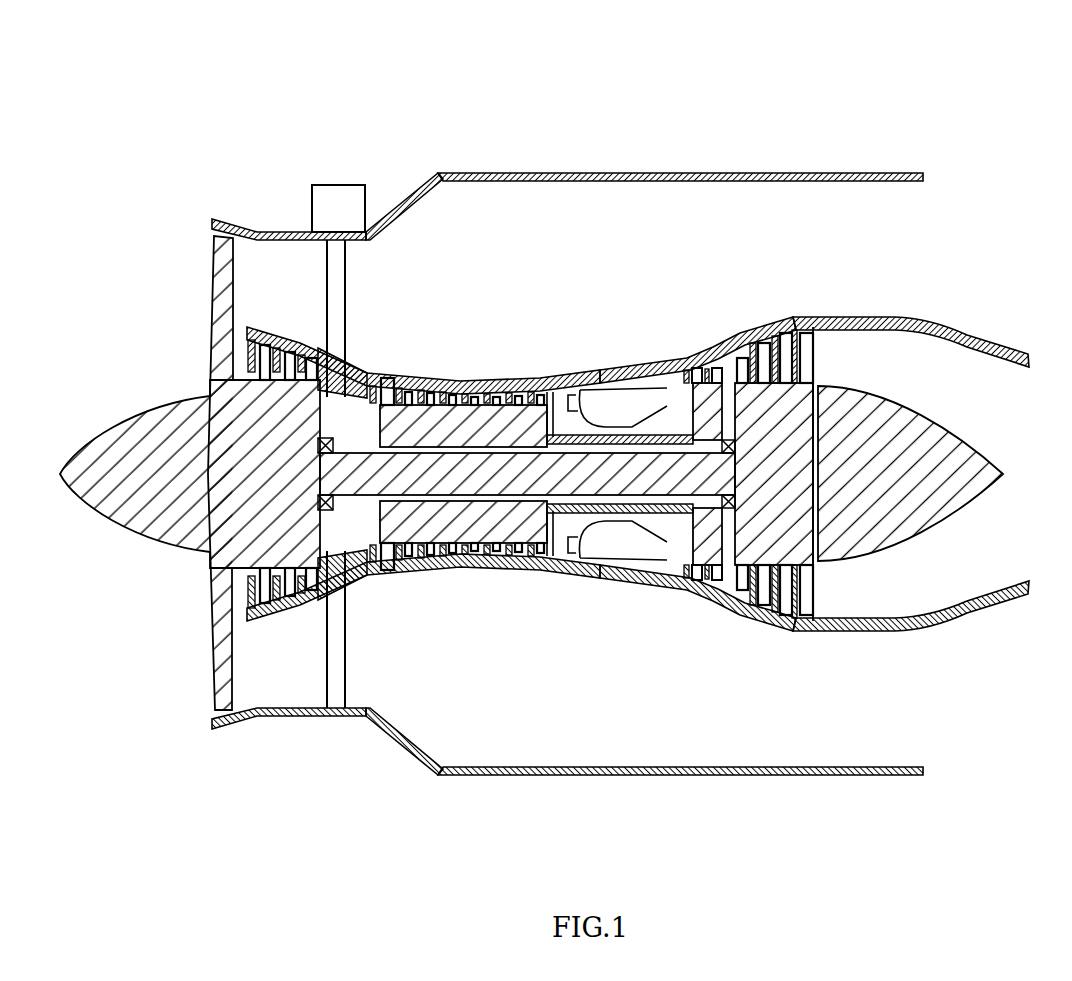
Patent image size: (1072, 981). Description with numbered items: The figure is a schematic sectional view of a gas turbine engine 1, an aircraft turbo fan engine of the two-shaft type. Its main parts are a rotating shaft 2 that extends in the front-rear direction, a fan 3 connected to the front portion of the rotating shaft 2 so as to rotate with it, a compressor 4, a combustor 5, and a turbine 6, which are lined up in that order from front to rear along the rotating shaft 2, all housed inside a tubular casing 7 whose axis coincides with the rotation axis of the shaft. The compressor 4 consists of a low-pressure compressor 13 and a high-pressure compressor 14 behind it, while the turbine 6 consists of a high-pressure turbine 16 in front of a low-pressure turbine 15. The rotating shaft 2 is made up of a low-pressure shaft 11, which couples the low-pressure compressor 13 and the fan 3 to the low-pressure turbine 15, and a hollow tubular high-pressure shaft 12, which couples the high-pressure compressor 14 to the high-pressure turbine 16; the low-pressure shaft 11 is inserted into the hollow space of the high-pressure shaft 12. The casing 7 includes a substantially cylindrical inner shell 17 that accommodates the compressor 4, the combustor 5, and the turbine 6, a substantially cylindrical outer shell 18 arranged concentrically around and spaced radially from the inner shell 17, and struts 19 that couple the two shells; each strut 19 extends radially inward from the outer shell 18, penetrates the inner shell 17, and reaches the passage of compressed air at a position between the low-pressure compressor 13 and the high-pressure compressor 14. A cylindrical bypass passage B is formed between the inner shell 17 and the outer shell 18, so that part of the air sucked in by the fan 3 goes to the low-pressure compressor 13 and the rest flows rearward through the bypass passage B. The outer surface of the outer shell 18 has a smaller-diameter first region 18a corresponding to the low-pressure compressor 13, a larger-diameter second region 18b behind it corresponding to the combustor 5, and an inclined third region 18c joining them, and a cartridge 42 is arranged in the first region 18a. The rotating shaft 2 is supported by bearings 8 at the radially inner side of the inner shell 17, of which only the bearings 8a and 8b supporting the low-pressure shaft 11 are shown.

The gas turbine engine 1 is at (544, 479).
The rotating shaft 2 is at (397, 613).
The fan 3 is at (208, 306).
The compressor 4 is at (394, 638).
The combustor 5 is at (608, 548).
The turbine 6 is at (747, 605).
The casing 7 is at (567, 408).
The bearings 8 is at (490, 580).
The bearing 8a is at (320, 537).
The bearing 8b is at (730, 508).
The low-pressure shaft 11 is at (354, 545).
The high-pressure shaft 12 is at (380, 522).
The low-pressure compressor 13 is at (287, 608).
The high-pressure compressor 14 is at (462, 560).
The low-pressure turbine 15 is at (758, 587).
The high-pressure turbine 16 is at (710, 583).
The inner shell 17 is at (840, 315).
The outer shell 18 is at (567, 408).
The first region 18a is at (294, 232).
The second region 18b is at (456, 173).
The third region 18c is at (408, 192).
The struts 19 is at (327, 293).
The cartridge 42 is at (338, 177).
The bypass passage B is at (515, 262).